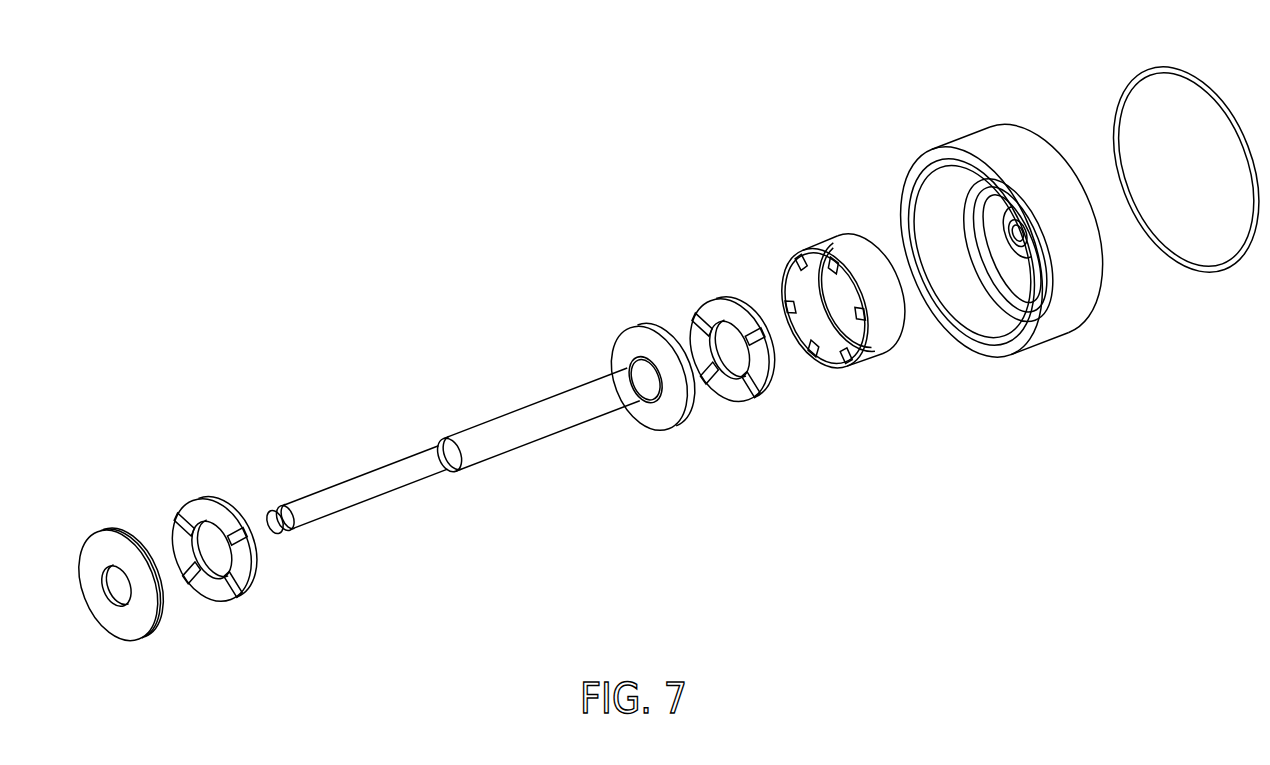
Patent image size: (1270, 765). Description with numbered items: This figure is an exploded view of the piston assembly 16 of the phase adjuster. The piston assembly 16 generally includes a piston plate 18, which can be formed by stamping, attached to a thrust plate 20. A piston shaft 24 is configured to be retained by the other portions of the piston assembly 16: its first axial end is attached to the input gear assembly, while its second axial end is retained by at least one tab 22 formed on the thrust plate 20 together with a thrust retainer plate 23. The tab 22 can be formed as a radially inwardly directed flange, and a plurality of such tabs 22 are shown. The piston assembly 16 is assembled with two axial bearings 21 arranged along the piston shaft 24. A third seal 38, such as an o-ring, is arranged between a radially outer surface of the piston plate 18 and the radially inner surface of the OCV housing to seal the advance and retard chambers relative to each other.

The piston assembly 16 is at (446, 183).
The piston plate 18 is at (943, 160).
The thrust plate 20 is at (836, 250).
The axial bearings 21 is at (190, 508).
The tab 22 is at (818, 358).
The thrust retainer plate 23 is at (104, 548).
The piston shaft 24 is at (493, 438).
The third seal 38 is at (1122, 92).